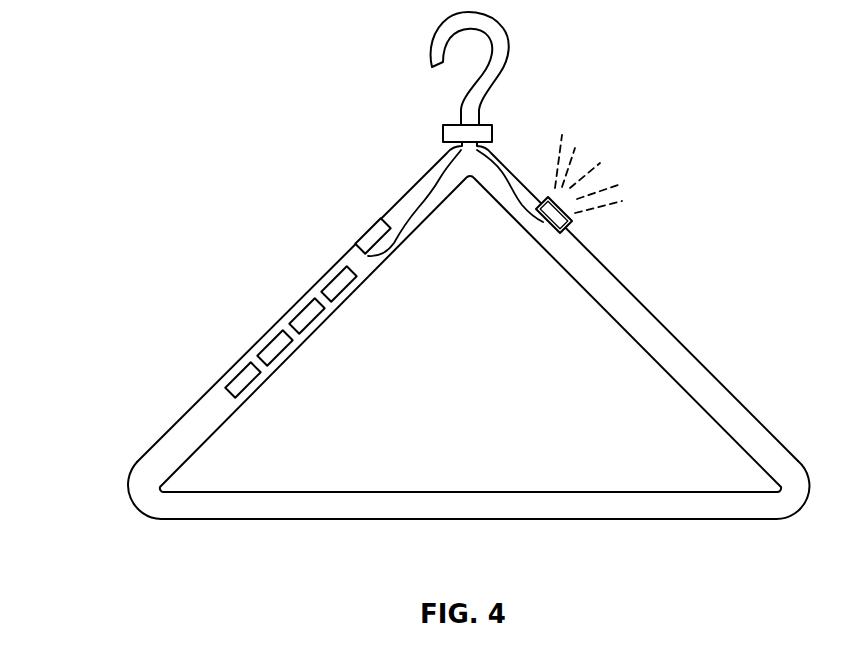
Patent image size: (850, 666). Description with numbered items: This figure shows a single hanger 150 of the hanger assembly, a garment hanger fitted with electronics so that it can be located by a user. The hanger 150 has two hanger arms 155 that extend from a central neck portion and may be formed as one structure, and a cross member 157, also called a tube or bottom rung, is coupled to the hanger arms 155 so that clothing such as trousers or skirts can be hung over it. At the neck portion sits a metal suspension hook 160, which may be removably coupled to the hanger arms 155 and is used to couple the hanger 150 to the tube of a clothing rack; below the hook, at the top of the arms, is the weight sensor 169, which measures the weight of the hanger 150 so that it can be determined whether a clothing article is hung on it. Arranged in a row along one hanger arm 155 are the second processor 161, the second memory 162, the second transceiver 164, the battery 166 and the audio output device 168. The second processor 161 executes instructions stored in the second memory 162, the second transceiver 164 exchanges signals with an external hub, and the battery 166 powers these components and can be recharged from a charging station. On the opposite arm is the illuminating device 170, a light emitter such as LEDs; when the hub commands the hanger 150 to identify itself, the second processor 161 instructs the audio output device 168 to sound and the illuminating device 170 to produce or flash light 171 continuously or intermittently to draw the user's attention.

The hanger 150 is at (116, 86).
The hanger arms 155 is at (685, 342).
The cross member 157 is at (268, 520).
The metal suspension hook 160 is at (508, 50).
The weight sensor 169 is at (448, 124).
The second processor 161 is at (236, 370).
The second memory 162 is at (268, 338).
The second transceiver 164 is at (300, 305).
The battery 166 is at (333, 272).
The audio output device 168 is at (364, 229).
The illuminating device 170 is at (562, 232).
The light 171 is at (623, 194).